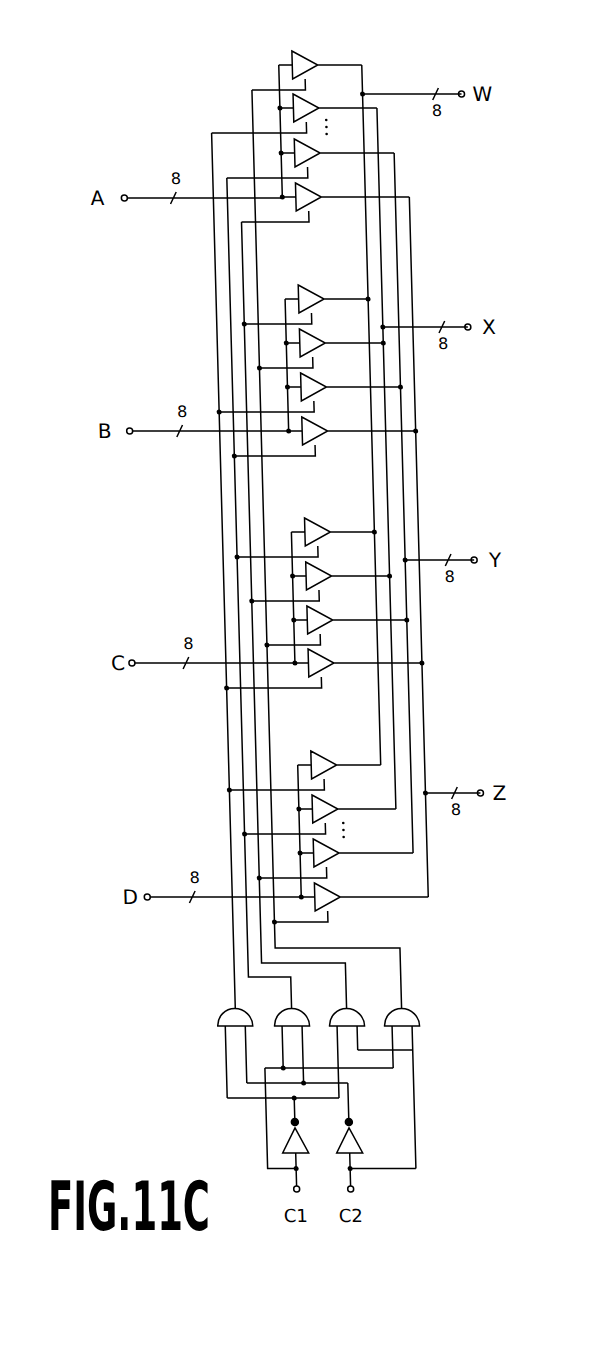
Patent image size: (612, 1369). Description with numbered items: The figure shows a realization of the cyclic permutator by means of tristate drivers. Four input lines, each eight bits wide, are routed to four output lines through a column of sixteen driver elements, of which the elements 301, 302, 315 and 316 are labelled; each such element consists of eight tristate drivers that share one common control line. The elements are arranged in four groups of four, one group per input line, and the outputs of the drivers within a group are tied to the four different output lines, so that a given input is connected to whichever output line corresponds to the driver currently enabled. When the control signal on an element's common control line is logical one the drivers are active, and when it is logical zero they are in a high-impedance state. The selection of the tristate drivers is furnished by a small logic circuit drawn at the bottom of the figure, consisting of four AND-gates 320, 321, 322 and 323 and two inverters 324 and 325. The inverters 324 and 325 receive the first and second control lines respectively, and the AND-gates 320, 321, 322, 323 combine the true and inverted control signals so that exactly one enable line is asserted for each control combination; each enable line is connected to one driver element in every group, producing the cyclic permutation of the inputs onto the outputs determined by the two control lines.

The tristate driver element 301 is at (299, 52).
The tristate driver element 302 is at (307, 98).
The tristate driver element 315 is at (310, 860).
The tristate driver element 316 is at (310, 903).
The AND-gate 320 is at (192, 1012).
The AND-gate 321 is at (250, 1012).
The AND-gate 322 is at (333, 1008).
The AND-gate 323 is at (393, 1007).
The inverter 324 is at (252, 1142).
The inverter 325 is at (329, 1142).